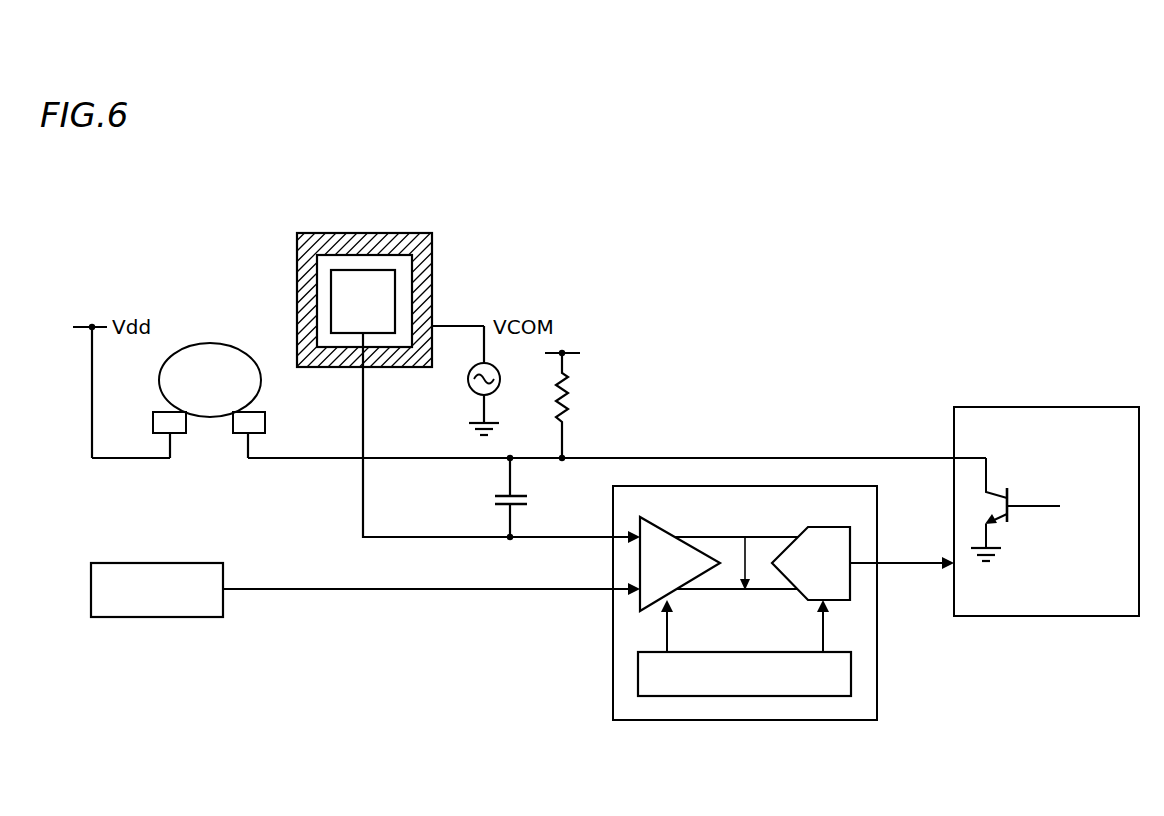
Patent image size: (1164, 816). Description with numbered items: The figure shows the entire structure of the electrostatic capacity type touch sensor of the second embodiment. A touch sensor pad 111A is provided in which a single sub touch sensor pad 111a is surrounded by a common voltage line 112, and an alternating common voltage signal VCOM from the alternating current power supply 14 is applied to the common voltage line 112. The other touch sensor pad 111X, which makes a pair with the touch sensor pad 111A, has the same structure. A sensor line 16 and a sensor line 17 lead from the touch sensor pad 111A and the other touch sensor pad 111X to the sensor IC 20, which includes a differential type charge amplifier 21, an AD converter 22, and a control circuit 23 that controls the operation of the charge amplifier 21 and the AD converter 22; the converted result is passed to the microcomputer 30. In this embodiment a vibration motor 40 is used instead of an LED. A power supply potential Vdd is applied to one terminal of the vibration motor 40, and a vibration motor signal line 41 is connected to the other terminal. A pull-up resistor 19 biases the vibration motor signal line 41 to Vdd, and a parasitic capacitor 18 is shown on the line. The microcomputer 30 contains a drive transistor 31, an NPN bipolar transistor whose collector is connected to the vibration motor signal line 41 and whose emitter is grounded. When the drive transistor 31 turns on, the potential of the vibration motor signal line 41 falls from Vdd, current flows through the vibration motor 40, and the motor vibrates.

The touch sensor pad 111A is at (358, 274).
The common voltage line 112 is at (433, 240).
The sub touch sensor pad 111a is at (382, 297).
The vibration motor 40 is at (197, 346).
The alternating current power supply 14 is at (468, 390).
The pull-up resistor 19 is at (577, 400).
The parasitic capacitor 18 is at (535, 502).
The vibration motor signal line 41 is at (418, 462).
The sensor line 16 is at (393, 542).
The sensor line 17 is at (310, 592).
The other touch sensor pad 111X is at (212, 618).
The sensor IC 20 is at (783, 592).
The differential type charge amplifier 21 is at (668, 523).
The AD converter 22 is at (828, 527).
The control circuit 23 is at (780, 698).
The microcomputer 30 is at (1046, 485).
The drive transistor 31 is at (1012, 477).